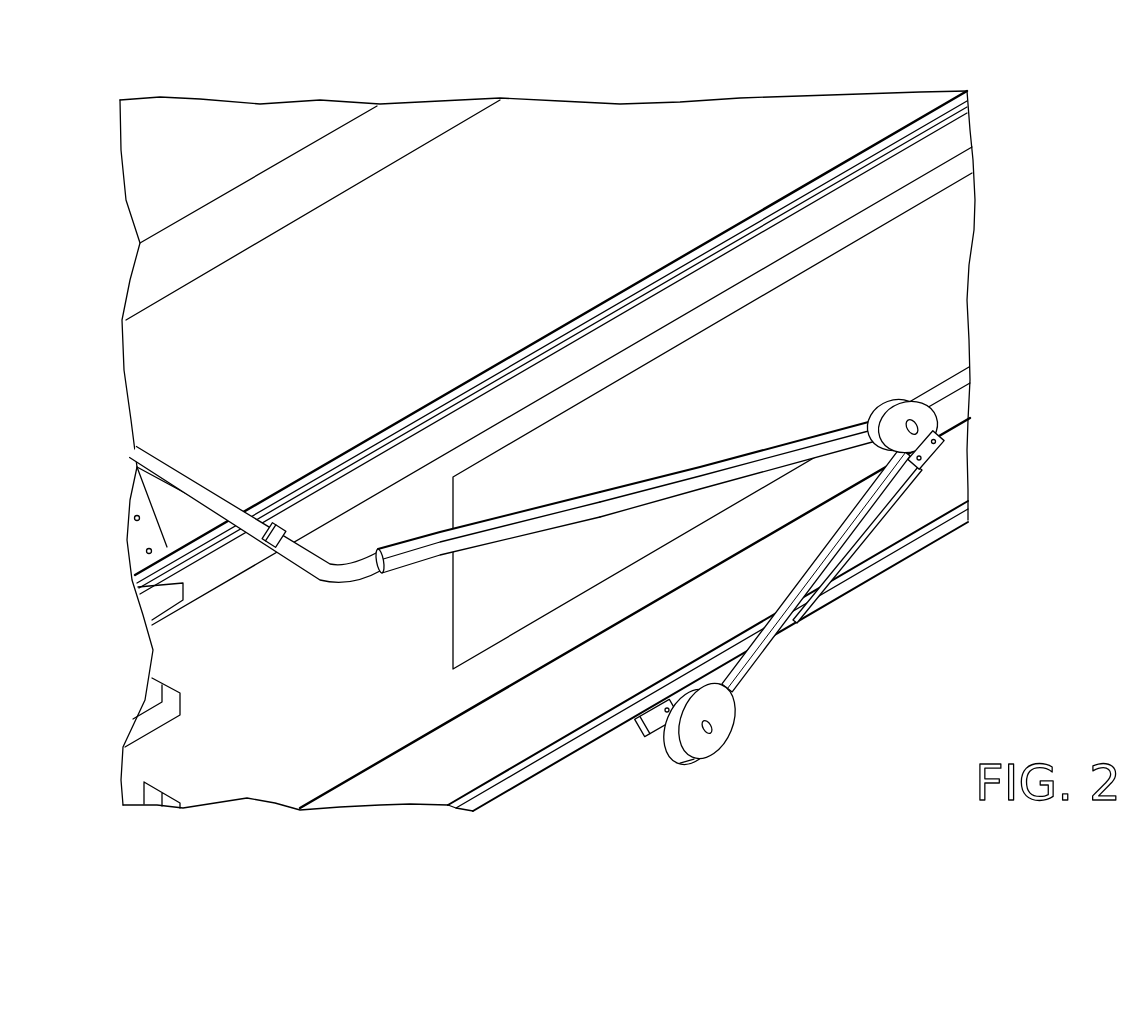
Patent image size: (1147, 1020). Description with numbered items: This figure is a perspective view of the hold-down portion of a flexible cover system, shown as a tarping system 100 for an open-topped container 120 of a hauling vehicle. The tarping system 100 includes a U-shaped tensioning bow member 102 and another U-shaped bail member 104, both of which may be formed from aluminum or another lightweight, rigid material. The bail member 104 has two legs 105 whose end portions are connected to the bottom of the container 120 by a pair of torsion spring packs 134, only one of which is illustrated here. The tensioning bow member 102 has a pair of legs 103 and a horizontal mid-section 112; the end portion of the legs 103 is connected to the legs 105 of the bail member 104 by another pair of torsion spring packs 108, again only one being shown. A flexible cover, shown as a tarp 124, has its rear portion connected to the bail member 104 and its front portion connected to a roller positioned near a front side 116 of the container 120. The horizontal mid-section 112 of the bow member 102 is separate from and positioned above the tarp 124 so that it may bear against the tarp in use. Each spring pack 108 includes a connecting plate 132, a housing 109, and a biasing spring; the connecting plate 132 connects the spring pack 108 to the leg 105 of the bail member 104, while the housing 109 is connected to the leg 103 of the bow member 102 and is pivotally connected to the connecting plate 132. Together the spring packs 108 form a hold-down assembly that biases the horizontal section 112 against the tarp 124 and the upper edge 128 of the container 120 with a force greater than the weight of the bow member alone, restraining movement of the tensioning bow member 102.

The tarping system 100 is at (704, 556).
The tensioning bow member 102 is at (629, 482).
The legs 103 is at (733, 457).
The bail member 104 is at (775, 643).
The legs 105 is at (843, 542).
The torsion spring packs 108 is at (893, 402).
The housing 109 is at (937, 432).
The horizontal mid-section 112 is at (173, 470).
The front side 116 is at (157, 774).
The open-topped container 120 is at (513, 788).
The tarp 124 is at (782, 125).
The upper edge 128 is at (420, 410).
The connecting plate 132 is at (946, 450).
The torsion spring packs 134 is at (730, 727).